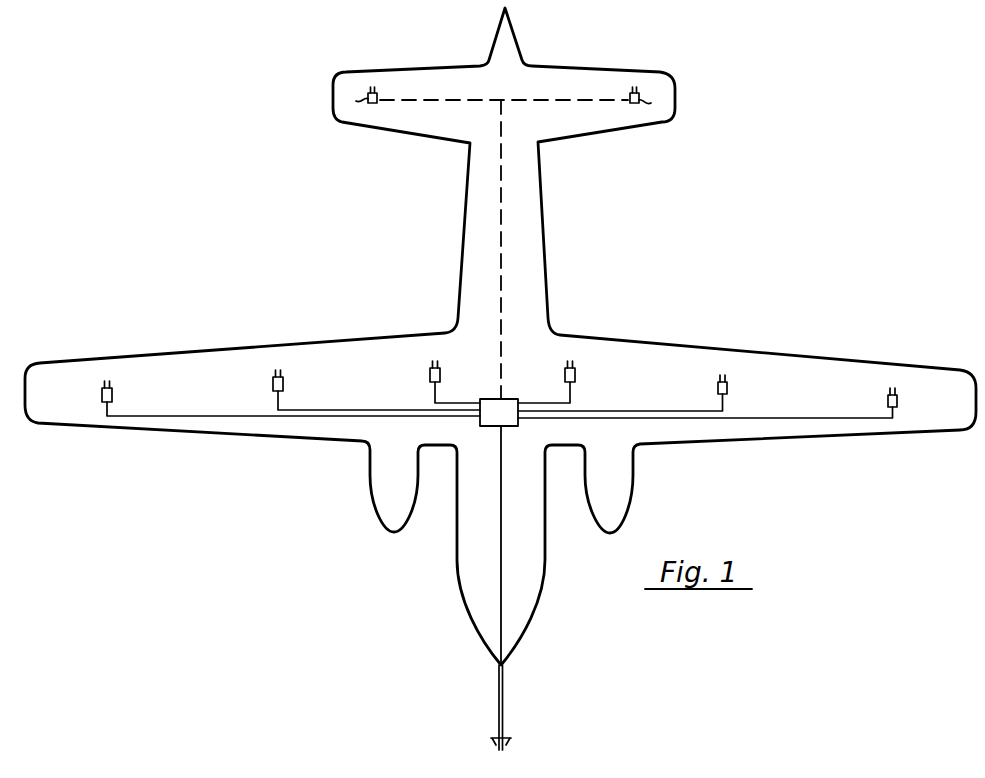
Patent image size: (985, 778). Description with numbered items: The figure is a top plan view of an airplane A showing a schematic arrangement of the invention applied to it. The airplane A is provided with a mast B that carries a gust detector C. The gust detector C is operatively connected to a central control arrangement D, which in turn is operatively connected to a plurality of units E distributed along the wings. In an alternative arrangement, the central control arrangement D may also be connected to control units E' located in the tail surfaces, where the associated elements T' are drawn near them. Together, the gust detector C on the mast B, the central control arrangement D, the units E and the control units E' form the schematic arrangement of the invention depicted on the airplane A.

The airplane A is at (557, 227).
The mast B is at (504, 688).
The gust detector C is at (511, 741).
The central control arrangement D is at (503, 397).
The units E is at (511, 383).
The control units E' is at (503, 88).
The tail terminals T' is at (504, 107).